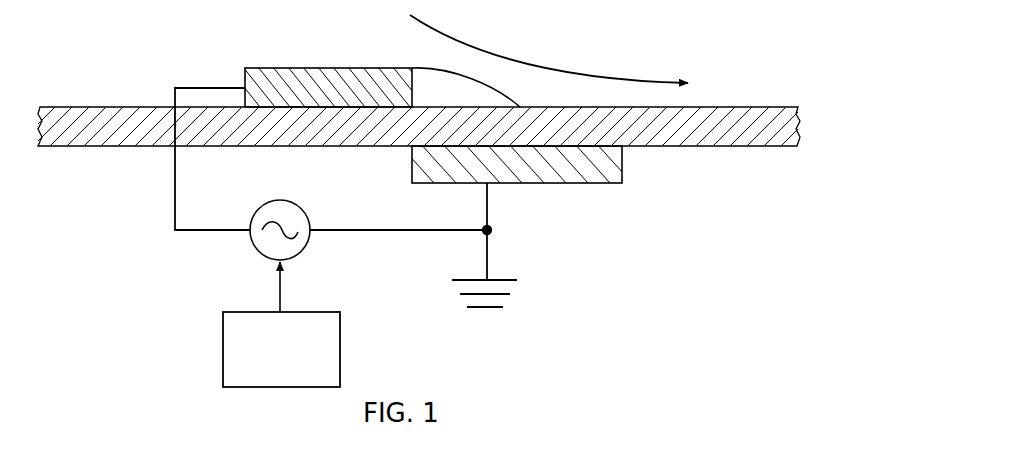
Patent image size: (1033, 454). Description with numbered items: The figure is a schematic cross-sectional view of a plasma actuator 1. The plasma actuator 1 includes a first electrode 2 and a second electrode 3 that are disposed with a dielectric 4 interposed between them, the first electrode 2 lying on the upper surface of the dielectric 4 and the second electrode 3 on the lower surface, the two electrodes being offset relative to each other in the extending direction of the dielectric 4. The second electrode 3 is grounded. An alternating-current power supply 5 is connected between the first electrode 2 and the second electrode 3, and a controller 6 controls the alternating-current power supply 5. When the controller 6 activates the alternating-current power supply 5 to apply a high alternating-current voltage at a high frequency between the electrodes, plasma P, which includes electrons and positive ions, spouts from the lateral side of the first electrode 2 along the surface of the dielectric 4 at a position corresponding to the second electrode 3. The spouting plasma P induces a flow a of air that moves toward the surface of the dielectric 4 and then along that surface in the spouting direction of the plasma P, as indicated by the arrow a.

The plasma actuator 1 is at (202, 75).
The first electrode 2 is at (288, 82).
The second electrode 3 is at (585, 175).
The dielectric 4 is at (110, 142).
The alternating-current power supply 5 is at (308, 203).
The controller 6 is at (327, 310).
The plasma P is at (445, 90).
The flow of air a is at (549, 49).